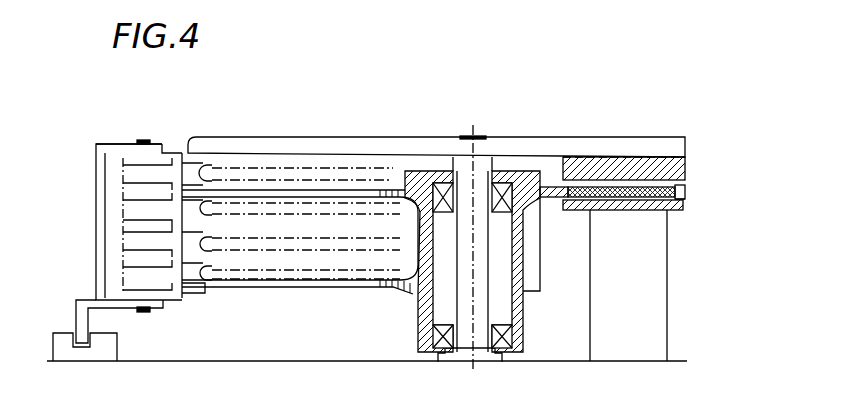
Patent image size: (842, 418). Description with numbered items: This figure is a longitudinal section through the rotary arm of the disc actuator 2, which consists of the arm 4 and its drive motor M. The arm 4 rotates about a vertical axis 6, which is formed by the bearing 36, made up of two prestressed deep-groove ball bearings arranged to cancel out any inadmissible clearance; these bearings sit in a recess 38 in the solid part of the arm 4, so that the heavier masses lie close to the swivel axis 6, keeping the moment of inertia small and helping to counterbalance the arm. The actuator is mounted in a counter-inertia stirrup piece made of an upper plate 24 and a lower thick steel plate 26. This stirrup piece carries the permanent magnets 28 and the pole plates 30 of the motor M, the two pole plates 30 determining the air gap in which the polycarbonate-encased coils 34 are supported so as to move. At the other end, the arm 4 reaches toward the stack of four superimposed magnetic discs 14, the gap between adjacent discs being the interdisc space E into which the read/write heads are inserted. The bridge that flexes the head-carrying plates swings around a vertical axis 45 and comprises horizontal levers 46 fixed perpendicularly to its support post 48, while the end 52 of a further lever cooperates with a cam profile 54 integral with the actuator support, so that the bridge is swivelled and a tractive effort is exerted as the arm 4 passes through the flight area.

The actuator 2 is at (503, 122).
The arm 4 is at (283, 288).
The vertical axis 6 is at (470, 153).
The magnetic disc 14 is at (222, 208).
The upper plate 24 is at (306, 136).
The lower thick steel plate 26 is at (367, 379).
The permanent magnets 28 is at (653, 310).
The pole plates 30 is at (655, 170).
The coils 34 is at (684, 188).
The bearing 36 is at (516, 334).
The recess 38 is at (514, 281).
The vertical axis 45 is at (141, 140).
The levers 46 is at (110, 145).
The support post 48 is at (100, 215).
The end of lever 52 is at (80, 320).
The cam profile 54 is at (92, 325).
The interdisc space E is at (164, 246).
The drive motor M is at (684, 206).